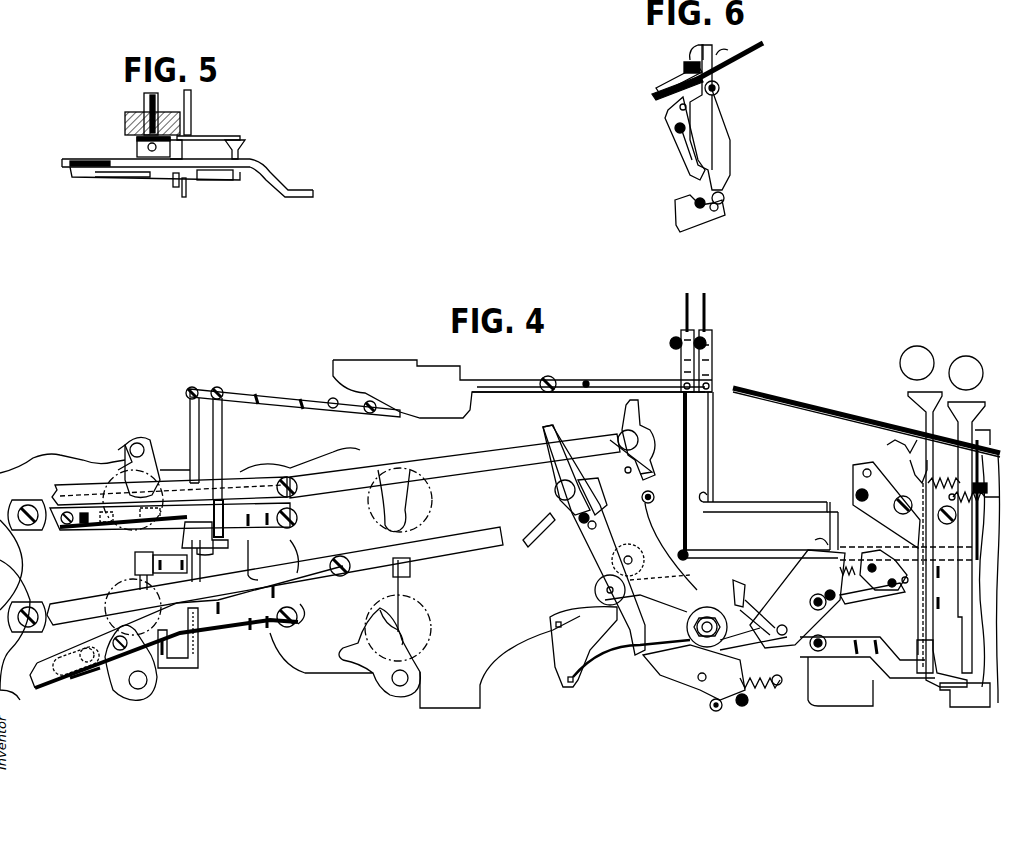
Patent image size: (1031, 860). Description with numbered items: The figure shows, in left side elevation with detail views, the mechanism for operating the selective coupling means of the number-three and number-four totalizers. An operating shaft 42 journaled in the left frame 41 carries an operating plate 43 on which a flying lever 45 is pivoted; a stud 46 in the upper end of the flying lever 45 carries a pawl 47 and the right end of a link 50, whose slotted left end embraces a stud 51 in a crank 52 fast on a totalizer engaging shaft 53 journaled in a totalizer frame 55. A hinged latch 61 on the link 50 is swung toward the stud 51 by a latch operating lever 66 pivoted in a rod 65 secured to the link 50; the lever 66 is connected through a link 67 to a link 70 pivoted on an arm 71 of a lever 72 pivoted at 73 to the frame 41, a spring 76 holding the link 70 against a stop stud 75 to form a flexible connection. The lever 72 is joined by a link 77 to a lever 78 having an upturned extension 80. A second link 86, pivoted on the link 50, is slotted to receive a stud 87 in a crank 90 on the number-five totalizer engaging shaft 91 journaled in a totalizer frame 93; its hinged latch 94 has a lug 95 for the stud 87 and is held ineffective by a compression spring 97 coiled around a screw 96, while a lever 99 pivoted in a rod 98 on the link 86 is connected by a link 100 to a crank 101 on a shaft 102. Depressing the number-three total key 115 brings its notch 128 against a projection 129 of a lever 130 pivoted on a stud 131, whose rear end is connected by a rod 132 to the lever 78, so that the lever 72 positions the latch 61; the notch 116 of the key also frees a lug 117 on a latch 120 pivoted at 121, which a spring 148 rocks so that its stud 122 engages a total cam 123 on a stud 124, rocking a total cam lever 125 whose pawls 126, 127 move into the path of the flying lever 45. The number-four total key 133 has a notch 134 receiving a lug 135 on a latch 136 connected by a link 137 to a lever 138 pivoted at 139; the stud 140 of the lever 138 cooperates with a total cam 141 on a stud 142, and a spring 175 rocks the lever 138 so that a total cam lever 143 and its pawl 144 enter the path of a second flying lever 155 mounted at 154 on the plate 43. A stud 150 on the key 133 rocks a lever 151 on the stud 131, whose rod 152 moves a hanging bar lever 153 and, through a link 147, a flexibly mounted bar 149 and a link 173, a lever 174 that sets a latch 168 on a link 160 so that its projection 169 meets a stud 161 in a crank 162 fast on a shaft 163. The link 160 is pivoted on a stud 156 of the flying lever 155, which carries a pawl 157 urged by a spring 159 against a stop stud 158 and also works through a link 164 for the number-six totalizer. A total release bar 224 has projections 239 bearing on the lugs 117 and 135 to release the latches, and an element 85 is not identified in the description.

In FIG. 4, the left frame 41 is at (380, 366).
In FIG. 4, the operating shaft 42 is at (690, 628).
In FIG. 4, the operating plate 43 is at (723, 580).
In FIG. 4, the flying lever 45 is at (647, 593).
In FIG. 4, the stud 46 is at (640, 440).
In FIG. 4, the pawl 47 is at (614, 436).
In FIG. 4, the link 50 is at (470, 455).
In FIG. 4, the stud 51 is at (125, 525).
In FIG. 4, the crank 52 is at (118, 455).
In FIG. 4, the totalizer engaging shaft 53 is at (148, 438).
In FIG. 4, the totalizer frame 55 is at (62, 457).
In FIG. 4, the hinged latch 61 is at (82, 530).
In FIG. 4, the rod 65 is at (225, 523).
In FIG. 4, the latch operating lever 66 is at (214, 552).
In FIG. 4, the link 67 is at (222, 436).
In FIG. 4, the link 70 is at (262, 390).
In FIG. 4, the arm 71 is at (482, 372).
In FIG. 4, the lever 72 is at (590, 380).
In FIG. 4, the pivot 73 is at (548, 376).
In FIG. 4, the stop stud 75 is at (348, 420).
In FIG. 4, the spring 76 is at (300, 398).
In FIG. 4, the link 77 is at (714, 350).
In FIG. 4, the lever 78 is at (708, 335).
In FIG. 4, the upturned extension 80 is at (706, 303).
In FIG. 4, the pivot 85 is at (650, 490).
In FIG. 5, the link 86 is at (100, 159).
In FIG. 4, the link 86 is at (50, 485).
In FIG. 5, the stud 87 is at (172, 148).
In FIG. 5, the crank 90 is at (137, 152).
In FIG. 5, the totalizer engaging shaft 91 is at (144, 100).
In FIG. 5, the totalizer frame 93 is at (125, 120).
In FIG. 5, the hinged latch 94 is at (112, 180).
In FIG. 5, the lug 95 is at (140, 178).
In FIG. 5, the screw 96 is at (185, 197).
In FIG. 5, the compression spring 97 is at (176, 187).
In FIG. 5, the rod 98 is at (254, 162).
In FIG. 5, the lever 99 is at (225, 180).
In FIG. 5, the link 100 is at (246, 142).
In FIG. 5, the crank 101 is at (204, 138).
In FIG. 5, the shaft 102 is at (191, 97).
In FIG. 4, the number three total key 115 is at (977, 424).
In FIG. 4, the notch 116 is at (936, 480).
In FIG. 4, the lug 117 is at (966, 480).
In FIG. 4, the latch 120 is at (907, 545).
In FIG. 4, the pivot 121 is at (914, 514).
In FIG. 4, the stud 122 is at (935, 688).
In FIG. 4, the total cam 123 is at (895, 660).
In FIG. 4, the stud 124 is at (820, 653).
In FIG. 4, the total cam lever 125 is at (708, 702).
In FIG. 4, the pawl 126 is at (640, 672).
In FIG. 4, the pawl 127 is at (748, 604).
In FIG. 4, the notch 128 is at (999, 474).
In FIG. 4, the projection 129 is at (992, 438).
In FIG. 4, the lever 130 is at (773, 488).
In FIG. 4, the stud 131 is at (820, 550).
In FIG. 4, the rod 132 is at (714, 435).
In FIG. 6, the number four total key 133 is at (716, 128).
In FIG. 4, the number four total key 133 is at (915, 422).
In FIG. 6, the notch 134 is at (690, 50).
In FIG. 4, the notch 134 is at (908, 452).
In FIG. 6, the lug 135 is at (672, 78).
In FIG. 6, the latch 136 is at (660, 96).
In FIG. 6, the link 137 is at (717, 98).
In FIG. 4, the link 137 is at (905, 470).
In FIG. 6, the lever 138 is at (685, 142).
In FIG. 4, the lever 138 is at (875, 538).
In FIG. 6, the pivot 139 is at (676, 128).
In FIG. 4, the pivot 139 is at (855, 492).
In FIG. 6, the stud 140 is at (727, 193).
In FIG. 4, the stud 140 is at (865, 590).
In FIG. 6, the total cam 141 is at (712, 214).
In FIG. 4, the total cam 141 is at (884, 568).
In FIG. 4, the stud 142 is at (812, 598).
In FIG. 4, the total cam lever 143 is at (740, 705).
In FIG. 4, the pawl 144 is at (738, 585).
In FIG. 4, the link 147 is at (680, 350).
In FIG. 4, the spring 148 is at (950, 524).
In FIG. 4, the flexibly mounted bar 149 is at (205, 374).
In FIG. 4, the stud 150 is at (905, 615).
In FIG. 4, the lever 151 is at (757, 550).
In FIG. 4, the rod 152 is at (684, 411).
In FIG. 4, the hanging bar lever 153 is at (684, 305).
In FIG. 4, the pivot 154 is at (596, 588).
In FIG. 4, the flying lever 155 is at (590, 553).
In FIG. 4, the stud 156 is at (555, 490).
In FIG. 4, the pawl 157 is at (525, 535).
In FIG. 4, the stop stud 158 is at (596, 495).
In FIG. 4, the spring 159 is at (606, 460).
In FIG. 4, the link 160 is at (428, 545).
In FIG. 4, the stud 161 is at (95, 648).
In FIG. 4, the crank 162 is at (120, 686).
In FIG. 4, the shaft 163 is at (138, 690).
In FIG. 4, the link 164 is at (257, 560).
In FIG. 4, the latch 168 is at (108, 676).
In FIG. 4, the projection 169 is at (68, 684).
In FIG. 4, the link 173 is at (190, 432).
In FIG. 4, the lever 174 is at (172, 668).
In FIG. 6, the spring 175 is at (745, 60).
In FIG. 4, the spring 175 is at (928, 430).
In FIG. 6, the total release bar 224 is at (720, 45).
In FIG. 6, the projections 239 is at (684, 65).